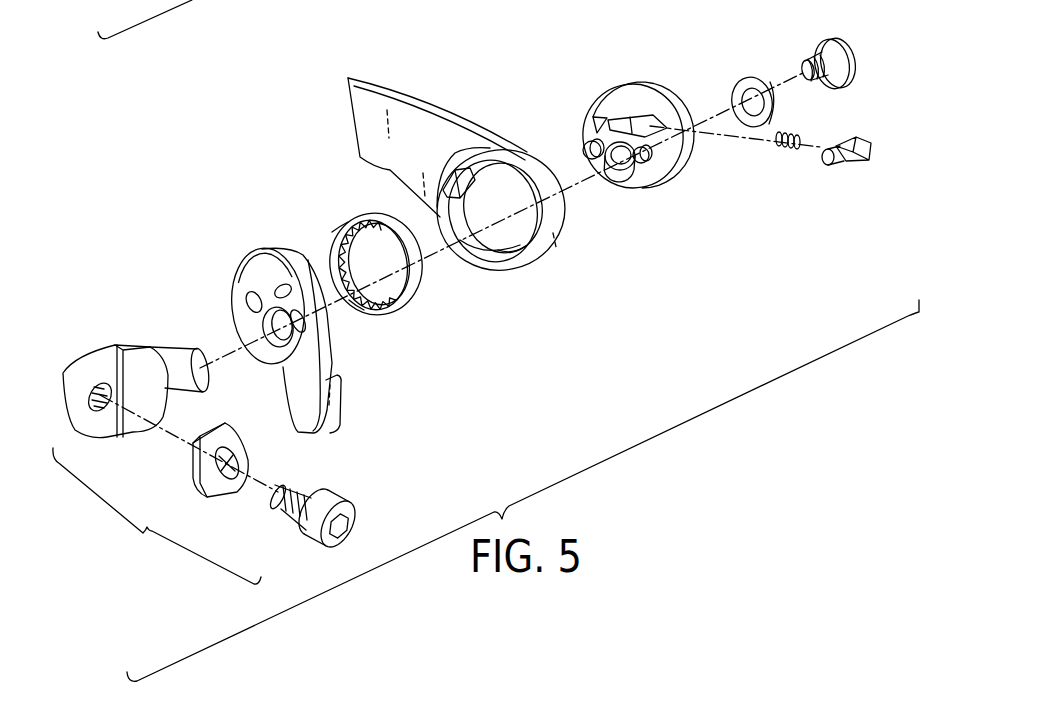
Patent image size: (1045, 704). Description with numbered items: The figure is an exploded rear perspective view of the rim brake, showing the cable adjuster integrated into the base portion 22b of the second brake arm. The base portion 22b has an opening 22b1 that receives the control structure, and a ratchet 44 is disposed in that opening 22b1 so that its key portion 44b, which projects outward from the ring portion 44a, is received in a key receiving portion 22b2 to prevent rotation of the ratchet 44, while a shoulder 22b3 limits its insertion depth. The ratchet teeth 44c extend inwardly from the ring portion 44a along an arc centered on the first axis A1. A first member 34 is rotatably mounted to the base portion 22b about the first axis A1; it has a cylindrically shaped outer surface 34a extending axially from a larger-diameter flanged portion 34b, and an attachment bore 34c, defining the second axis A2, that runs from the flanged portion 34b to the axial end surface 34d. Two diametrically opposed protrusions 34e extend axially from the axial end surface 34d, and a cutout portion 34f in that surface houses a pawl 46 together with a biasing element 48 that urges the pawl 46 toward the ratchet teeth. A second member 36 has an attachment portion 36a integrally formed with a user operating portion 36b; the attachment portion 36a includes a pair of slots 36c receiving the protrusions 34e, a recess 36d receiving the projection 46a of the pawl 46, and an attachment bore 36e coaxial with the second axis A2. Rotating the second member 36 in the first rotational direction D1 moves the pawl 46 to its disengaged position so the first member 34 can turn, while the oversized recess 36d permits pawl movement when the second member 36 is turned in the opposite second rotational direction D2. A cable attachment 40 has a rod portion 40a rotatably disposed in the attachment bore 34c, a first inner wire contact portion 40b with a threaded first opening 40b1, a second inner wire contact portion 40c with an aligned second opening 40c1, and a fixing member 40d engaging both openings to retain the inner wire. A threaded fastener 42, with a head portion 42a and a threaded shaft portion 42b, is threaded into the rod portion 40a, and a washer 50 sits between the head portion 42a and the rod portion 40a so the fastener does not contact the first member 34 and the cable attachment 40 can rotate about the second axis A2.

The base portion 22b is at (482, 169).
The opening 22b1 is at (509, 234).
The key receiving portion 22b2 is at (447, 175).
The shoulder 22b3 is at (513, 256).
The first member 34 is at (642, 135).
The cylindrically shaped outer surface 34a is at (625, 105).
The flanged portion 34b is at (682, 100).
The attachment bore 34c is at (608, 182).
The axial end surface 34d is at (642, 173).
The protrusions 34e is at (585, 148).
The cutout portion 34f is at (647, 152).
The second member 36 is at (287, 308).
The attachment portion 36a is at (302, 250).
The user operating portion 36b is at (337, 403).
The slots 36c is at (247, 293).
The recess 36d is at (274, 287).
The attachment bore 36e is at (263, 328).
The cable attachment 40 is at (204, 437).
The rod portion 40a is at (193, 363).
The first inner wire contact portion 40b is at (111, 376).
The first opening 40b1 is at (90, 390).
The second inner wire contact portion 40c is at (175, 471).
The second opening 40c1 is at (219, 462).
The fixing member 40d is at (297, 522).
The threaded fastener 42 is at (857, 46).
The head portion 42a is at (855, 62).
The threaded shaft portion 42b is at (808, 60).
The ratchet 44 is at (396, 274).
The ring portion 44a is at (400, 312).
The key portion 44b is at (334, 234).
The ratchet teeth 44c is at (388, 321).
The pawl 46 is at (855, 164).
The projection 46a is at (827, 165).
The biasing element 48 is at (783, 150).
The washer 50 is at (757, 78).
The first axis A1 is at (434, 308).
The second axis A2 is at (436, 309).
The first rotational direction D1 is at (324, 467).
The second rotational direction D2 is at (302, 462).